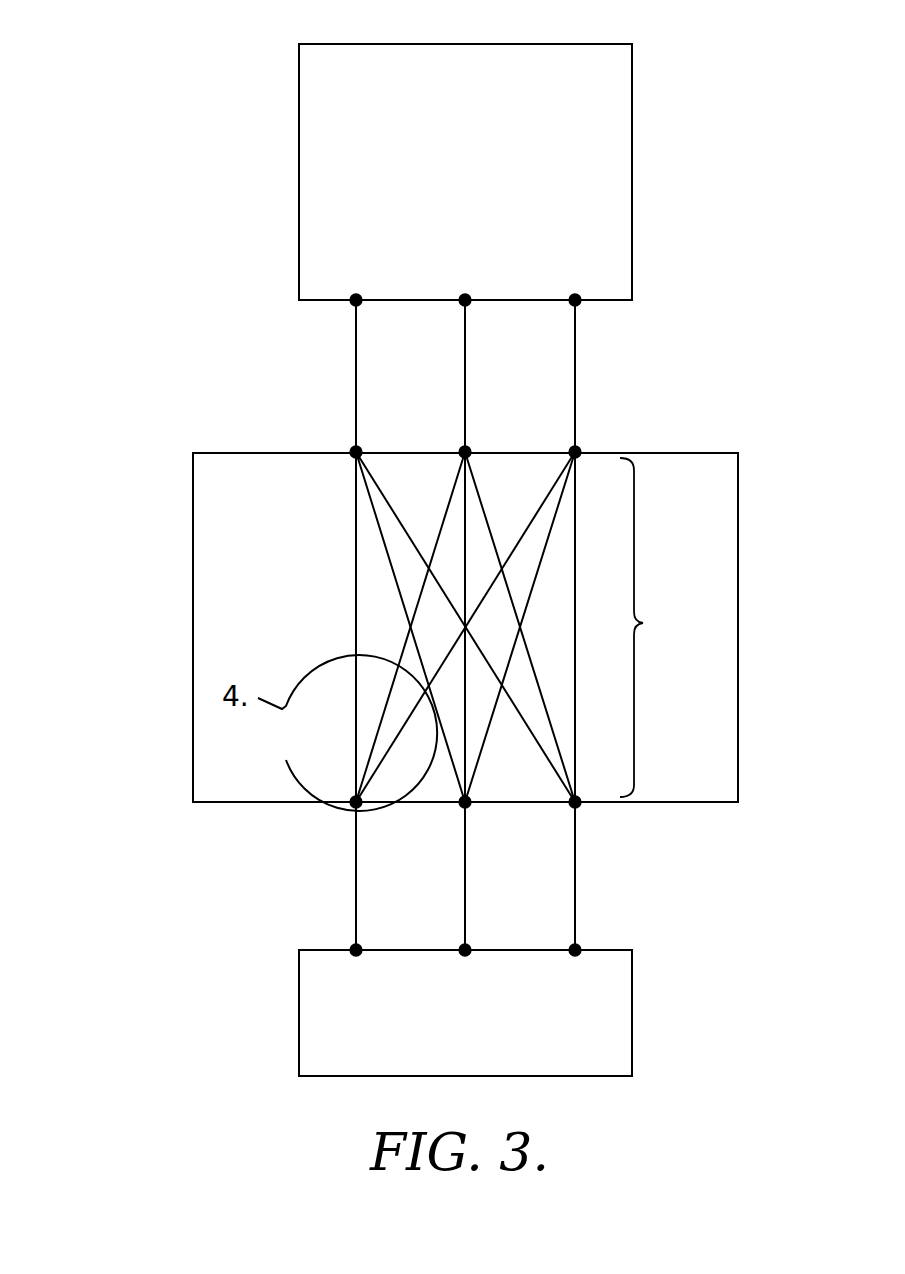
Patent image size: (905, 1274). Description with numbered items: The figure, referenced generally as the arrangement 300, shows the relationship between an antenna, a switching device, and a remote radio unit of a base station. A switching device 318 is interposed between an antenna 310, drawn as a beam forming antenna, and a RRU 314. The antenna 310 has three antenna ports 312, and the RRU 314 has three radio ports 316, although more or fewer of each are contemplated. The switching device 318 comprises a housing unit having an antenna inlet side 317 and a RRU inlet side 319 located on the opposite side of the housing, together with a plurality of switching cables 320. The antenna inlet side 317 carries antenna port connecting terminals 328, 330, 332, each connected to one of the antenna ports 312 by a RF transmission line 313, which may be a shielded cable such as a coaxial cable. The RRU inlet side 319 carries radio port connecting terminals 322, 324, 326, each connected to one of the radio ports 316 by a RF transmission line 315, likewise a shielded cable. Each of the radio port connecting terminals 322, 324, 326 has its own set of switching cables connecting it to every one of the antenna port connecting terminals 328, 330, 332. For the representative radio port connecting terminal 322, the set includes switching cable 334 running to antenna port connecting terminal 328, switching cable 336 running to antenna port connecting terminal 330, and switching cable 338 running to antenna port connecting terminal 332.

The switching arrangement 300 is at (105, 138).
The antenna 310 is at (550, 44).
The antenna ports 312 is at (571, 304).
The RF transmission line 313 is at (594, 372).
The RRU 314 is at (605, 950).
The RF transmission line 315 is at (594, 877).
The radio ports 316 is at (570, 946).
The antenna inlet side 317 is at (683, 438).
The switching device 318 is at (738, 583).
The RRU inlet side 319 is at (683, 820).
The switching cables 320 is at (658, 627).
The radio port connecting terminal 322 is at (350, 808).
The radio port connecting terminal 324 is at (460, 808).
The radio port connecting terminal 326 is at (570, 808).
The antenna port connecting terminal 328 is at (352, 447).
The antenna port connecting terminal 330 is at (461, 447).
The antenna port connecting terminal 332 is at (571, 447).
The switching cable 334 is at (355, 605).
The switching cable 336 is at (398, 662).
The switching cable 338 is at (393, 743).